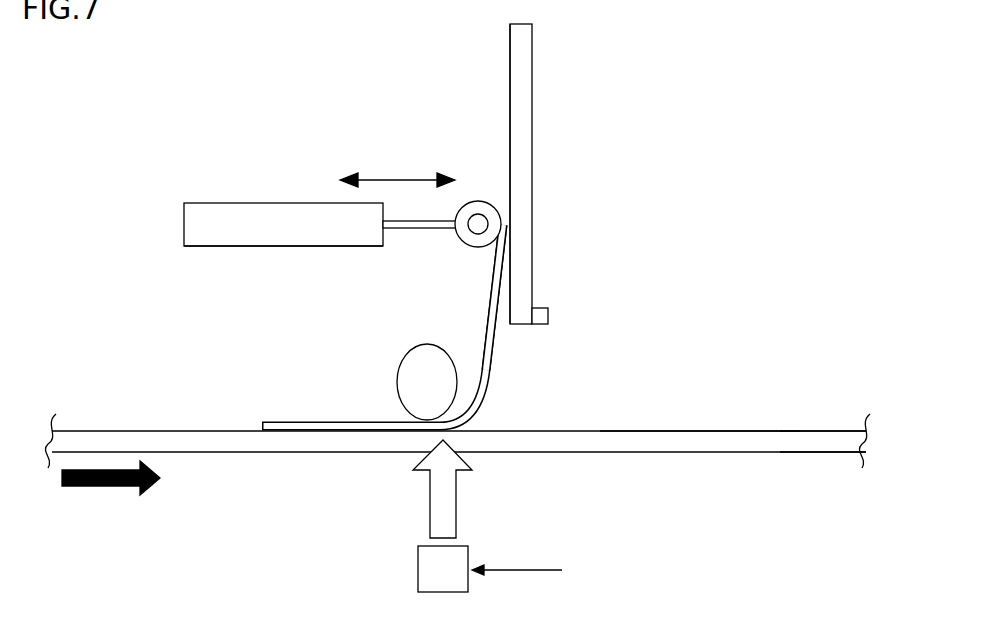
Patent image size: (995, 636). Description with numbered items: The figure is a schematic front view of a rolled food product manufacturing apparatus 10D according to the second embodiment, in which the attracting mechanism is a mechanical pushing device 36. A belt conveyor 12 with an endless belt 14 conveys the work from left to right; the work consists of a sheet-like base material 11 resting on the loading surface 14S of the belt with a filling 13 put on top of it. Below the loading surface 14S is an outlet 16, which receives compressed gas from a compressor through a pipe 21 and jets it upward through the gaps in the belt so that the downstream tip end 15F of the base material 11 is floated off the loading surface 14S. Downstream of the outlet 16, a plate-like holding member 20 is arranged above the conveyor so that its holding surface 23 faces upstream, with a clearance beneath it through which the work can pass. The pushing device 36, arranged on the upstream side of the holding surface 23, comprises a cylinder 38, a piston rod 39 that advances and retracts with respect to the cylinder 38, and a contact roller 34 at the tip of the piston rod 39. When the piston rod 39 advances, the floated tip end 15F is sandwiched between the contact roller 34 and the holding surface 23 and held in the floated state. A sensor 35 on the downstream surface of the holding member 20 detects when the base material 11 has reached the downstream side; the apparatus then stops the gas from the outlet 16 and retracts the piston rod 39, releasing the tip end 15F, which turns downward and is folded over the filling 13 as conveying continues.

The manufacturing apparatus 10D is at (740, 108).
The base material 11 is at (283, 421).
The belt conveyor 12 is at (812, 412).
The filling 13 is at (404, 382).
The endless belt 14 is at (725, 425).
The loading surface 14S is at (738, 430).
The tip end 15F is at (492, 284).
The outlet 16 is at (418, 572).
The holding member 20 is at (532, 152).
The pipe 21 is at (530, 569).
The holding surface 23 is at (510, 65).
The contact roller 34 is at (485, 201).
The sensor 35 is at (548, 318).
The pushing device 36 is at (197, 190).
The cylinder 38 is at (228, 247).
The piston rod 39 is at (408, 232).